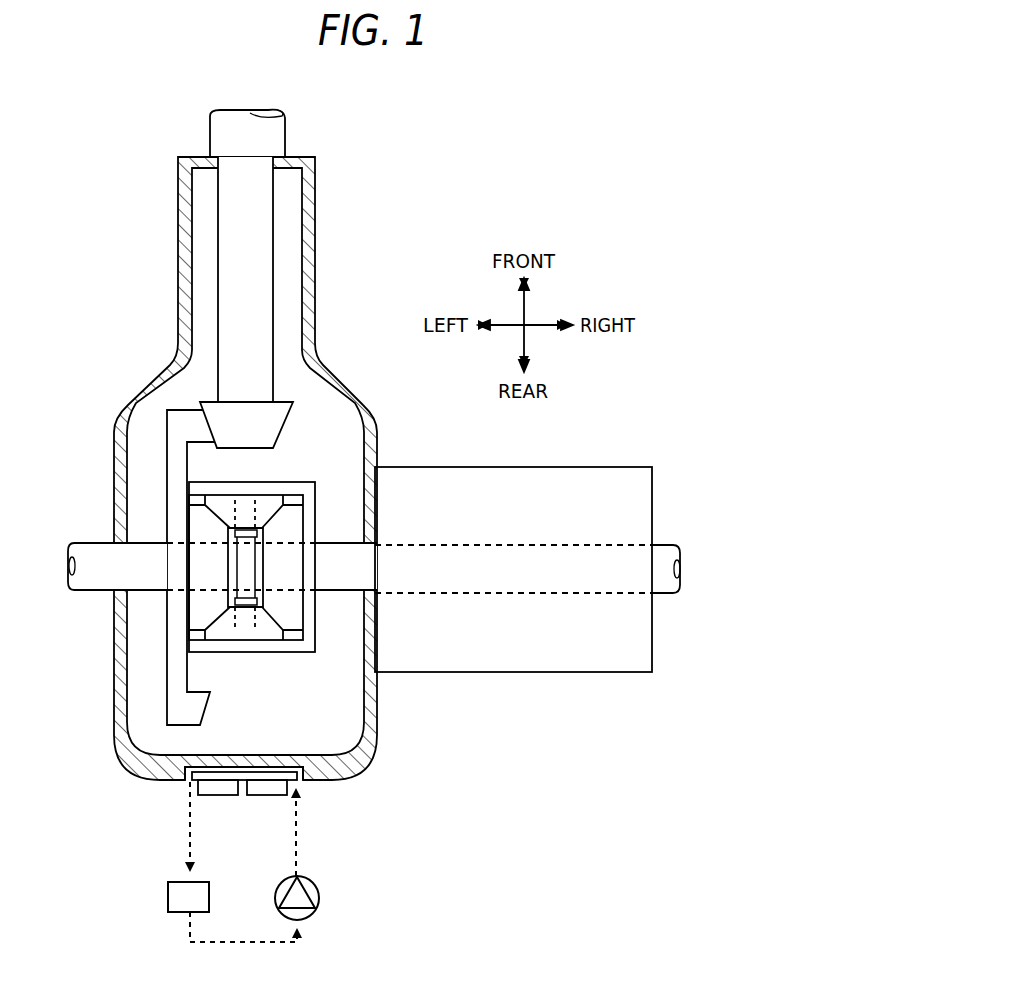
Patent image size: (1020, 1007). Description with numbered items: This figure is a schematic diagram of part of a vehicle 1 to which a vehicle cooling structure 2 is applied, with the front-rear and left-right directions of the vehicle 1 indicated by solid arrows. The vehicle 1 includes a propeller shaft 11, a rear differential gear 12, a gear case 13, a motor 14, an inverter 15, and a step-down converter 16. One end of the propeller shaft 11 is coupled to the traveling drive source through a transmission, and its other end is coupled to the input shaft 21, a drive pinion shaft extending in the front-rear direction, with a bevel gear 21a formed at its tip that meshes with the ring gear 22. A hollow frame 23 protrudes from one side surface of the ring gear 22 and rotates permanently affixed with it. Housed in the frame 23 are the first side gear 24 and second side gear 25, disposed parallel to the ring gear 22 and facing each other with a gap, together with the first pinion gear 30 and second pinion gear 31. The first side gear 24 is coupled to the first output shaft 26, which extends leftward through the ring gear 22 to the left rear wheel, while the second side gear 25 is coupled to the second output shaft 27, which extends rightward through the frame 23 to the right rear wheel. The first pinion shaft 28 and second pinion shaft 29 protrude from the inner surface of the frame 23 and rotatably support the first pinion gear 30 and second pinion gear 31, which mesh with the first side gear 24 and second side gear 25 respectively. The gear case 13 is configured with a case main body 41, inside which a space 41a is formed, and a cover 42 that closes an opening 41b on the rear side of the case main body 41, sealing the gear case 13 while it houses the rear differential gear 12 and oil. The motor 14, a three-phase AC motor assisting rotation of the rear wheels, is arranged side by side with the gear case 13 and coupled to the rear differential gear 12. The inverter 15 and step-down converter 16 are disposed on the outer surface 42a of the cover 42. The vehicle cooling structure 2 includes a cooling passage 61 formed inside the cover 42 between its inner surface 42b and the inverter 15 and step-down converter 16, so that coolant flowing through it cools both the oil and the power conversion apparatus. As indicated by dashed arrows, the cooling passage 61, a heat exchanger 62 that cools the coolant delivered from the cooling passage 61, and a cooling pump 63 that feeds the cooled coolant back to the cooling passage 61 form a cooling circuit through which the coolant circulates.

The vehicle 1 is at (416, 130).
The vehicle cooling structure 2 is at (227, 862).
The propeller shaft 11 is at (286, 119).
The rear differential gear 12 is at (245, 559).
The gear case 13 is at (130, 761).
The motor 14 is at (510, 673).
The inverter 15 is at (219, 796).
The step-down converter 16 is at (267, 796).
The input shaft 21 is at (274, 317).
The bevel gear 21a is at (286, 420).
The ring gear 22 is at (166, 452).
The frame 23 is at (314, 652).
The first side gear 24 is at (203, 526).
The second side gear 25 is at (290, 527).
The first output shaft 26 is at (144, 594).
The second output shaft 27 is at (343, 594).
The first pinion shaft 28 is at (236, 500).
The second pinion shaft 29 is at (237, 626).
The first pinion gear 30 is at (259, 503).
The second pinion gear 31 is at (258, 626).
The case main body 41 is at (113, 716).
The space 41a is at (300, 723).
The opening 41b is at (333, 768).
The cover 42 is at (142, 779).
The outer surface 42a is at (193, 797).
The inner surface 42b is at (222, 766).
The cooling passage 61 is at (187, 783).
The heat exchanger 62 is at (168, 897).
The cooling pump 63 is at (319, 897).